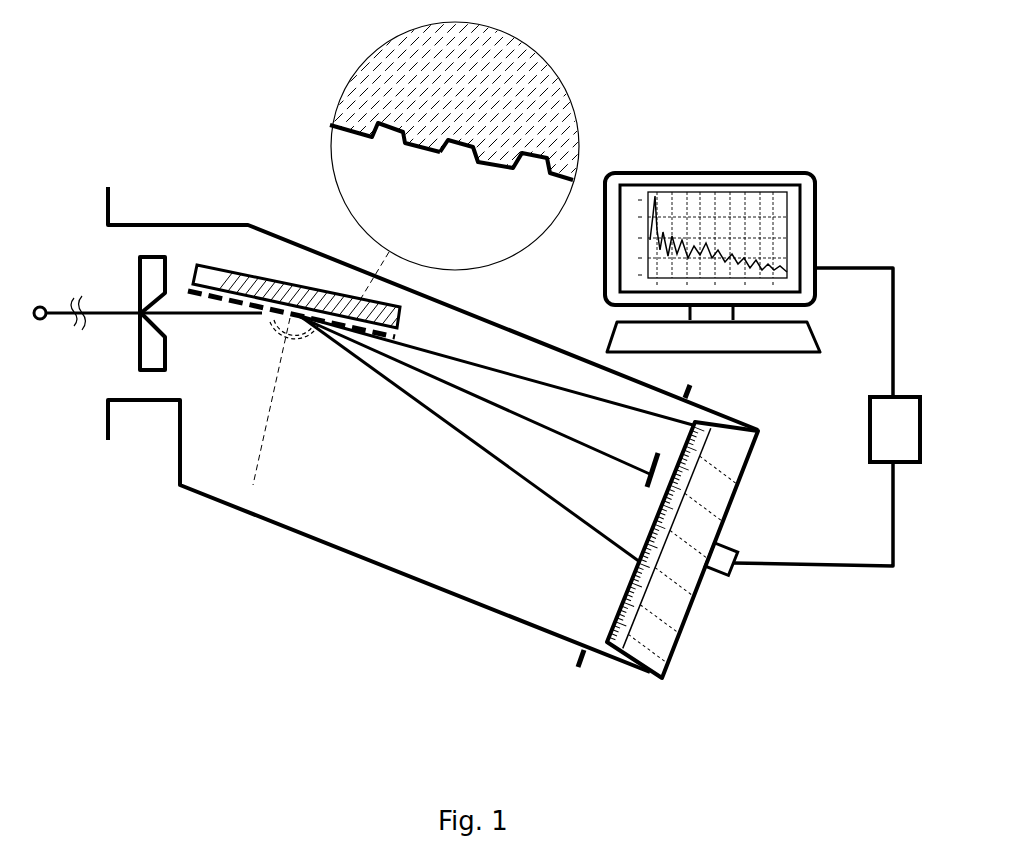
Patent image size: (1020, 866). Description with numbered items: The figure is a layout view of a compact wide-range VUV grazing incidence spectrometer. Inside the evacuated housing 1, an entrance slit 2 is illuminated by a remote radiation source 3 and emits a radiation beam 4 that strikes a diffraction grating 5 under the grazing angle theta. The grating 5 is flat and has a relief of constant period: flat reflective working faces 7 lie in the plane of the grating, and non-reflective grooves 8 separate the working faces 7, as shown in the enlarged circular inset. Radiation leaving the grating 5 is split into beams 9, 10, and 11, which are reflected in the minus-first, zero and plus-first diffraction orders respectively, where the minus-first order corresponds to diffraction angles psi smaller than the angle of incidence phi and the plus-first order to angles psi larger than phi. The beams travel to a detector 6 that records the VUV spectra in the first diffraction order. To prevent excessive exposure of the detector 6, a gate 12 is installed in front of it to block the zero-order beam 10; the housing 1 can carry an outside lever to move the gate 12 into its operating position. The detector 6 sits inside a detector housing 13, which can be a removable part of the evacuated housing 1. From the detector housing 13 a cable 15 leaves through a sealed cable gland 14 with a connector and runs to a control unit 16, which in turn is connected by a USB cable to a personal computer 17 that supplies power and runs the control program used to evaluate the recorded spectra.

The housing 1 is at (183, 225).
The entrance slit 2 is at (138, 277).
The remote radiation source 3 is at (40, 319).
The radiation beam 4 is at (198, 312).
The diffraction grating 5 is at (247, 282).
The detector 6 is at (624, 600).
The flat reflective working faces 7 is at (418, 150).
The non-reflective grooves 8 is at (530, 165).
The beam reflected in the −1st diffraction order 9 is at (497, 457).
The beam reflected in the 0 diffraction order 10 is at (535, 424).
The beam reflected in the +1st diffraction order 11 is at (578, 392).
The gate 12 is at (650, 480).
The detector housing 13 is at (660, 551).
The sealed cable gland 14 is at (722, 575).
The cable 15 is at (738, 565).
The control unit 16 is at (872, 428).
The personal computer 17 is at (816, 233).